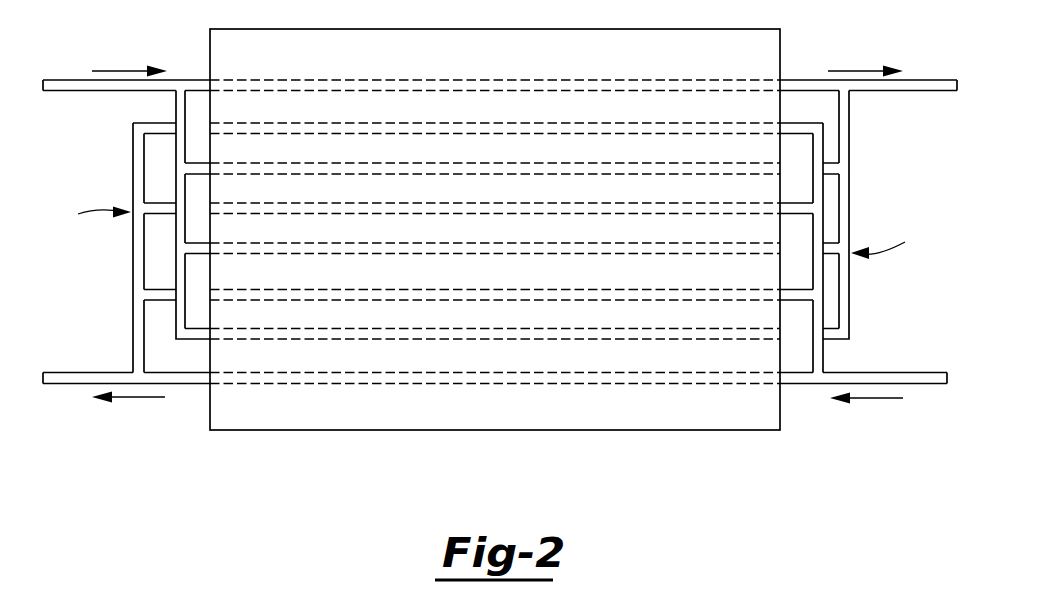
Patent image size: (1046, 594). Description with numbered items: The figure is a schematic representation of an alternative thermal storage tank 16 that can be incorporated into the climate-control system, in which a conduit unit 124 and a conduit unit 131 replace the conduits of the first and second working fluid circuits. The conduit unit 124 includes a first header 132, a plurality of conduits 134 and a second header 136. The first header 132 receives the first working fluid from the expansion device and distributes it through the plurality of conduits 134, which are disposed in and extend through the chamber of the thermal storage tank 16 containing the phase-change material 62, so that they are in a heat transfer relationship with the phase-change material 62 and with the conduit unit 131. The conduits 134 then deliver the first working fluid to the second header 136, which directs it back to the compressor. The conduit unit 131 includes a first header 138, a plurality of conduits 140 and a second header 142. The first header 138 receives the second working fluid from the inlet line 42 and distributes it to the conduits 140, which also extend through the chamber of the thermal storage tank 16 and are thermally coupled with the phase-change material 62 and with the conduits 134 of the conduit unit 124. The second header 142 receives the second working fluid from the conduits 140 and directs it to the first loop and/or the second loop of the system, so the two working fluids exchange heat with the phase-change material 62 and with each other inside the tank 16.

The thermal storage tank 16 is at (502, 282).
The phase-change material 62 is at (762, 430).
The plurality of conduits 134 is at (308, 80).
The plurality of conduits 140 is at (712, 134).
The first header 132 is at (176, 107).
The conduit unit 131 is at (88, 211).
The second header 142 is at (133, 342).
The second header 136 is at (850, 145).
The first header 138 is at (823, 355).
The conduit unit 124 is at (892, 237).
The inlet line 42 is at (930, 384).